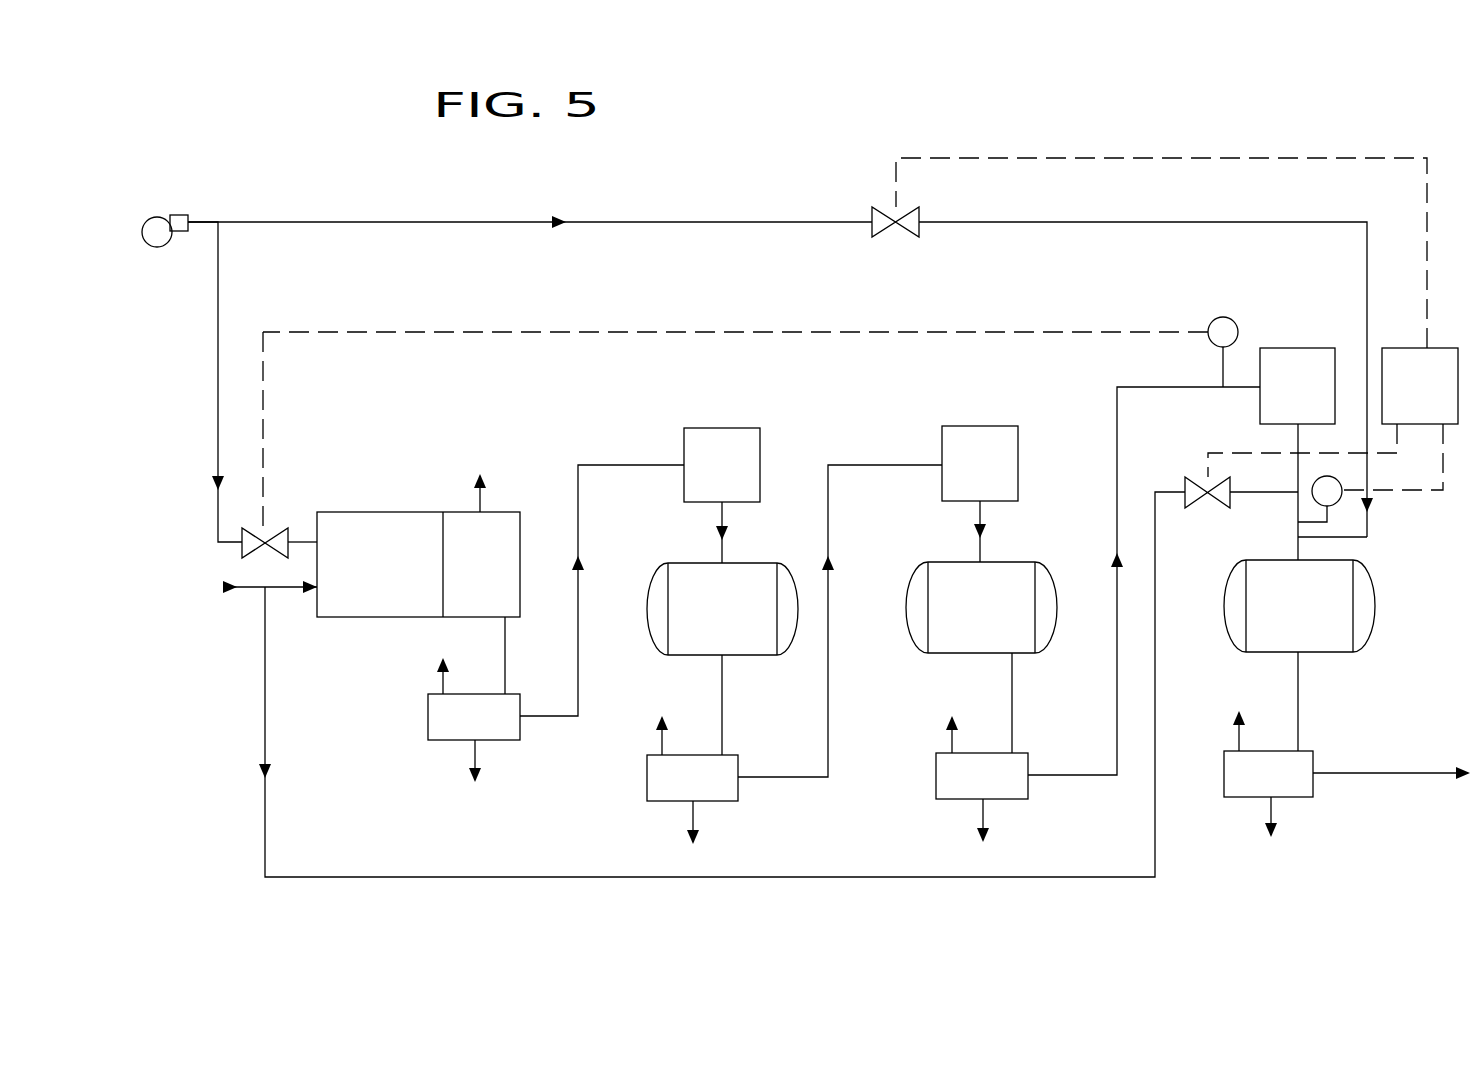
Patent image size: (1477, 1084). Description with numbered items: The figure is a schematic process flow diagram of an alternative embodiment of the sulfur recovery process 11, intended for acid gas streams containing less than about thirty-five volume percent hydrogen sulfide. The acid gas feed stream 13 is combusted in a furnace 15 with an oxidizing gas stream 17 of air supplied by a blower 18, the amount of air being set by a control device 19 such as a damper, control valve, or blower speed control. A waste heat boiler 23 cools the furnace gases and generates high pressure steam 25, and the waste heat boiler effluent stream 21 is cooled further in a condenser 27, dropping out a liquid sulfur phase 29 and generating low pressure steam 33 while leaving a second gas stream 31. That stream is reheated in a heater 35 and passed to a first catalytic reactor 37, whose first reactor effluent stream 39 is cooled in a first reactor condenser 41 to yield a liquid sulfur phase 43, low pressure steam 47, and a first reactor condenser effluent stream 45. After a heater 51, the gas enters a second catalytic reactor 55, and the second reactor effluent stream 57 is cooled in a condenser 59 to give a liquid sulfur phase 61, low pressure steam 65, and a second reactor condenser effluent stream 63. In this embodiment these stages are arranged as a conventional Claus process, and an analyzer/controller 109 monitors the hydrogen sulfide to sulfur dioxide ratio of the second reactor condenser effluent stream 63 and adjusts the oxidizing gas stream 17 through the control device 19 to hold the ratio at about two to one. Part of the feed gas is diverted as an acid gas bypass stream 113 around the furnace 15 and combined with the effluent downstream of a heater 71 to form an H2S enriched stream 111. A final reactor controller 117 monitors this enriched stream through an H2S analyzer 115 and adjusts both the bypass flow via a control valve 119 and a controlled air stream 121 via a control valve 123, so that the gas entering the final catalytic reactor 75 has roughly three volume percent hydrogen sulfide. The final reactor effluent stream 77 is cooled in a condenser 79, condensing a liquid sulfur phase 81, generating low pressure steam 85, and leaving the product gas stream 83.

The sulfur recovery process 11 is at (274, 71).
The acid gas feed stream 13 is at (248, 588).
The furnace 15 is at (397, 581).
The oxidizing gas stream 17 is at (218, 430).
The blower 18 is at (157, 217).
The control device 19 is at (243, 551).
The waste heat boiler effluent stream 21 is at (505, 660).
The waste heat boiler 23 is at (503, 581).
The high pressure steam 25 is at (476, 475).
The condenser 27 is at (428, 716).
The liquid sulfur phase 29 is at (468, 770).
The second gas stream 31 is at (622, 462).
The low pressure steam 33 is at (436, 663).
The heater 35 is at (745, 481).
The first catalytic reactor 37 is at (745, 623).
The first reactor effluent stream 39 is at (723, 700).
The first reactor condenser 41 is at (647, 783).
The liquid sulfur phase 43 is at (688, 833).
The first reactor condenser effluent stream 45 is at (840, 651).
The low pressure steam 47 is at (657, 723).
The heater 51 is at (1002, 480).
The second catalytic reactor 55 is at (1005, 621).
The second reactor effluent stream 57 is at (1012, 721).
The condenser 59 is at (936, 776).
The liquid sulfur phase 61 is at (977, 830).
The second reactor condenser effluent stream 63 is at (1117, 530).
The low pressure steam 65 is at (946, 722).
The heater 71 is at (1320, 400).
The final catalytic reactor 75 is at (1325, 619).
The final reactor effluent stream 77 is at (1298, 695).
The condenser 79 is at (1292, 799).
The liquid sulfur phase 81 is at (1263, 828).
The product gas stream 83 is at (1406, 770).
The low pressure steam 85 is at (1226, 715).
The analyzer/controller 109 is at (781, 399).
The H2S enriched stream 111 is at (1273, 517).
The acid gas bypass stream 113 is at (722, 904).
The H2S analyzer 115 is at (1374, 533).
The final reactor controller 117 is at (1445, 400).
The control valve 119 is at (1208, 492).
The controlled air stream 121 is at (1146, 358).
The control valve 123 is at (553, 197).